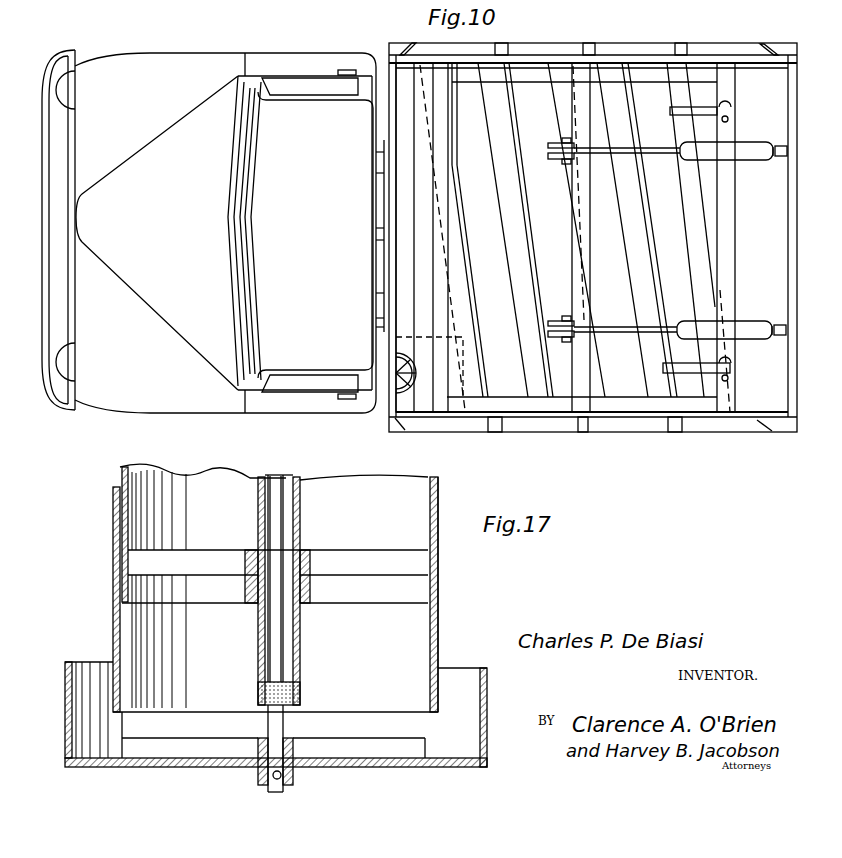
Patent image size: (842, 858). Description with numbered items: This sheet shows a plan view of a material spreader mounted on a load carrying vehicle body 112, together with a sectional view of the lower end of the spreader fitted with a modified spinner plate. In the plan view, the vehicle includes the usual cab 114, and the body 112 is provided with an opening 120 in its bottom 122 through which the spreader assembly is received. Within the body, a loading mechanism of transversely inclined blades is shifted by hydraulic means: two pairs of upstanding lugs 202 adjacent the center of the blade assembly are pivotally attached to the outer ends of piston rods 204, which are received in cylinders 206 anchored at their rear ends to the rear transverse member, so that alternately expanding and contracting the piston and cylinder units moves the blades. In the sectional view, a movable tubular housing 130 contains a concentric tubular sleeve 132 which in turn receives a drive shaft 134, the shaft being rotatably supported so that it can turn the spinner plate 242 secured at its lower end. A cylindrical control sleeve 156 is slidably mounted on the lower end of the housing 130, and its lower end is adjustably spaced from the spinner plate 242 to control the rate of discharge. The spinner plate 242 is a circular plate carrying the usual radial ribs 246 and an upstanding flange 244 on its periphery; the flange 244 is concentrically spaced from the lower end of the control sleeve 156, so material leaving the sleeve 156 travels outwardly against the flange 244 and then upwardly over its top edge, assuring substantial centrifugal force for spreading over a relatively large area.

In FIG. 10, the load carrying vehicle body 112 is at (533, 426).
In FIG. 10, the cab 114 is at (278, 116).
In FIG. 10, the opening 120 is at (398, 388).
In FIG. 10, the bottom 122 is at (398, 78).
In FIG. 10, the upstanding lugs 202 is at (550, 142).
In FIG. 10, the piston rods 204 is at (605, 157).
In FIG. 10, the cylinders 206 is at (745, 148).
In FIG. 17, the tubular housing 130 is at (431, 479).
In FIG. 17, the tubular sleeve 132 is at (301, 505).
In FIG. 17, the drive shaft 134 is at (279, 480).
In FIG. 17, the control sleeve 156 is at (439, 619).
In FIG. 17, the spinner plate 242 is at (456, 766).
In FIG. 17, the upstanding flange 244 is at (487, 668).
In FIG. 17, the radial ribs 246 is at (418, 738).